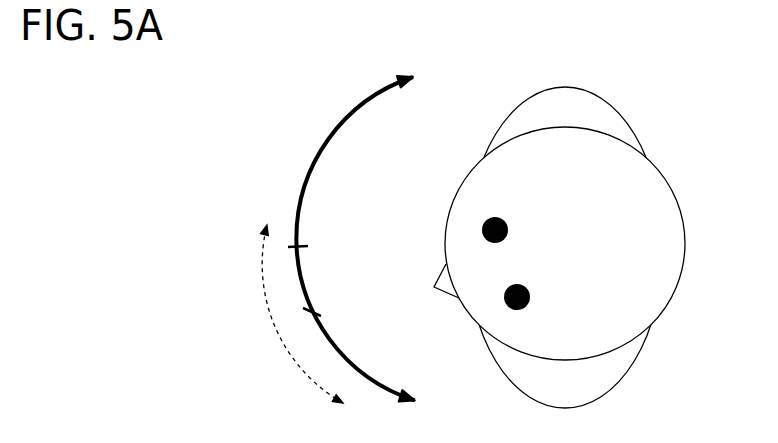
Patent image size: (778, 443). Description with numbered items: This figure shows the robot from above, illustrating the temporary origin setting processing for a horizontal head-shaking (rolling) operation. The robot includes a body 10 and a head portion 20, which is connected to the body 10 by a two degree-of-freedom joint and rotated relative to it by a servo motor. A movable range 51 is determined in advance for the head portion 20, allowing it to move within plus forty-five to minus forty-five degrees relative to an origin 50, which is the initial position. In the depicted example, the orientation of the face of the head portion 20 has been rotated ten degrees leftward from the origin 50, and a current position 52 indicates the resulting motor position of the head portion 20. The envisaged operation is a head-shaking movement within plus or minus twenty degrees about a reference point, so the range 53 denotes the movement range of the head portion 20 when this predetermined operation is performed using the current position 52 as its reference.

The body 10 is at (615, 113).
The head portion 20 is at (672, 197).
The origin 50 is at (298, 247).
The movable range 51 is at (343, 121).
The current position 52 is at (312, 312).
The range 53 is at (262, 272).